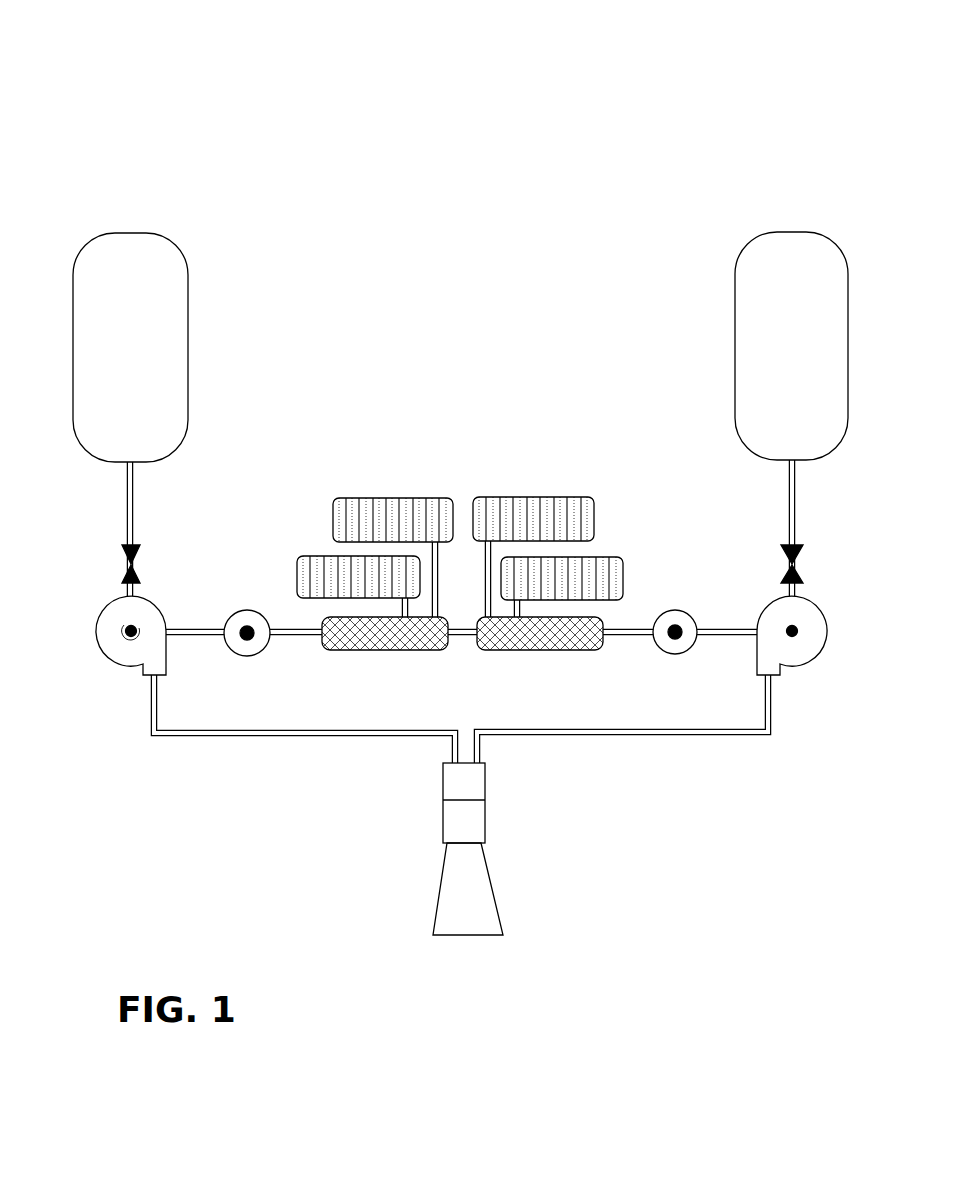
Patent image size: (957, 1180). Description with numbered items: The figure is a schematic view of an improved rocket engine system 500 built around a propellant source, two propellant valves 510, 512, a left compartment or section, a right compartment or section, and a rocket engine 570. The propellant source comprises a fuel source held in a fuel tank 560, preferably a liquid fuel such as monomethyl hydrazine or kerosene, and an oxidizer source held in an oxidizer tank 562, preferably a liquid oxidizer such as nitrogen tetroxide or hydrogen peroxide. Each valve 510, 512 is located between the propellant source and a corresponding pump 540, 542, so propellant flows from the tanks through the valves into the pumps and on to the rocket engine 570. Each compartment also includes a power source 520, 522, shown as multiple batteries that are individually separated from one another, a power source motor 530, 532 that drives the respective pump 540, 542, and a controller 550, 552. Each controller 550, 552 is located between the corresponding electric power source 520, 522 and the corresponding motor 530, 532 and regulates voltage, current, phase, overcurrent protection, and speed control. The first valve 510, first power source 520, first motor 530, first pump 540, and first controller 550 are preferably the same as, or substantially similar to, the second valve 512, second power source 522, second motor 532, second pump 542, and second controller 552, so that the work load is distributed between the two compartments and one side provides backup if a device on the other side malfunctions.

The improved rocket engine system 500 is at (112, 73).
The first propellant valve 510 is at (122, 553).
The second propellant valve 512 is at (800, 555).
The first power source 520 is at (425, 497).
The second power source 522 is at (583, 497).
The first power source motor 530 is at (245, 657).
The second power source motor 532 is at (680, 657).
The first pump 540 is at (103, 656).
The second pump 542 is at (825, 648).
The first controller 550 is at (390, 652).
The second controller 552 is at (555, 652).
The fuel tank 560 is at (186, 313).
The oxidizer tank 562 is at (736, 318).
The rocket engine 570 is at (490, 818).